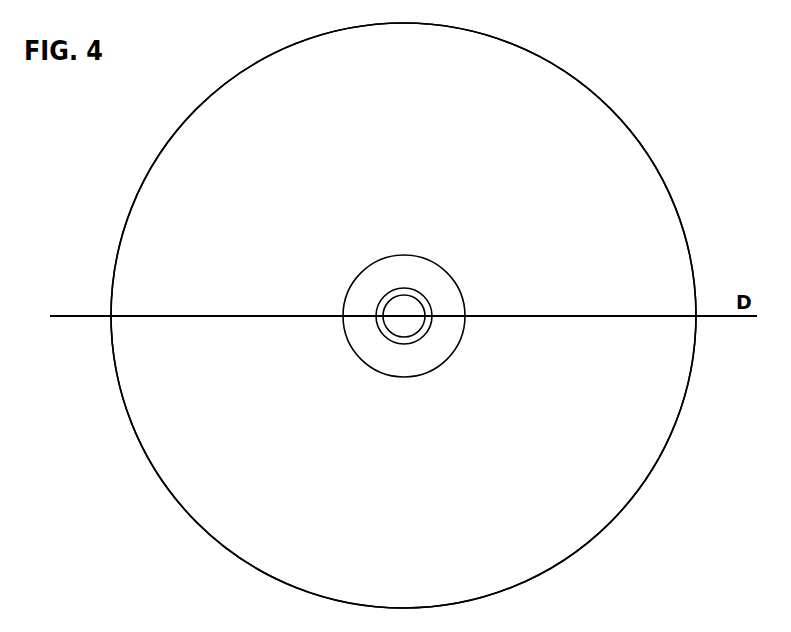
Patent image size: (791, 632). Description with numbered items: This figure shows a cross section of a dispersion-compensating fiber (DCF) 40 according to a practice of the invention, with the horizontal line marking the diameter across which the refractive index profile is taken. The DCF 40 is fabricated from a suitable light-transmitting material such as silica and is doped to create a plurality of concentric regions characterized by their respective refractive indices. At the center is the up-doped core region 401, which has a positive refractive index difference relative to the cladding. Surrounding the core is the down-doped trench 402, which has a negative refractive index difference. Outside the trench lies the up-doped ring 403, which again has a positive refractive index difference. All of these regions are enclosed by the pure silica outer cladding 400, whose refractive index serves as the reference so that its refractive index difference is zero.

The dispersion-compensating fiber 40 is at (683, 62).
The pure silica outer cladding 400 is at (421, 164).
The up-doped core region 401 is at (402, 305).
The down-doped trench 402 is at (419, 294).
The up-doped ring 403 is at (451, 308).